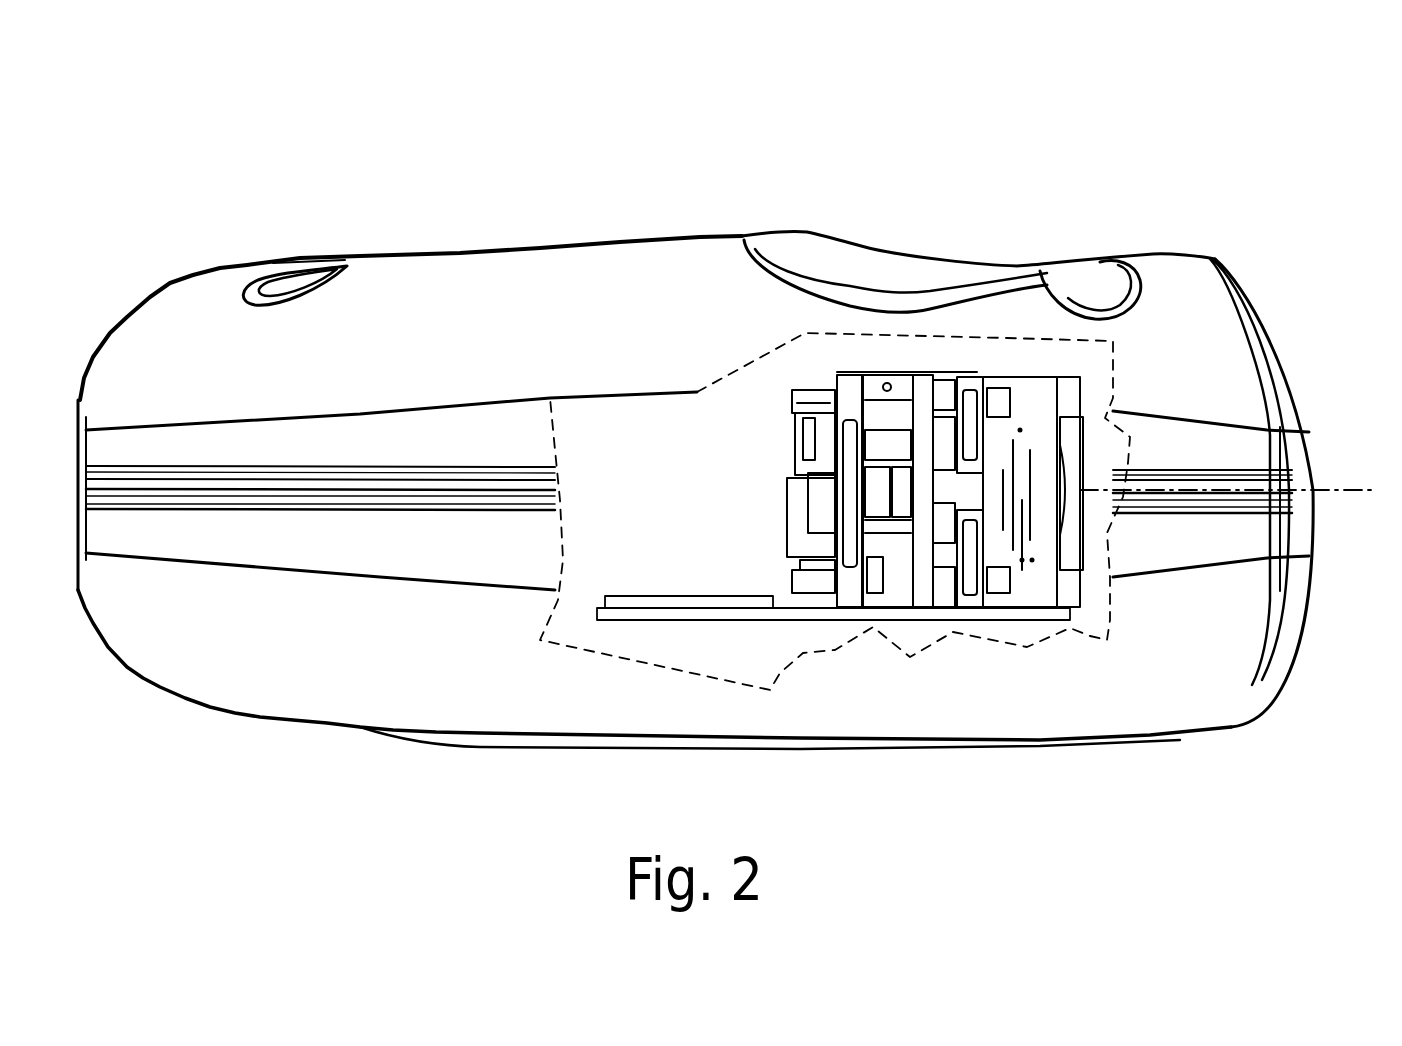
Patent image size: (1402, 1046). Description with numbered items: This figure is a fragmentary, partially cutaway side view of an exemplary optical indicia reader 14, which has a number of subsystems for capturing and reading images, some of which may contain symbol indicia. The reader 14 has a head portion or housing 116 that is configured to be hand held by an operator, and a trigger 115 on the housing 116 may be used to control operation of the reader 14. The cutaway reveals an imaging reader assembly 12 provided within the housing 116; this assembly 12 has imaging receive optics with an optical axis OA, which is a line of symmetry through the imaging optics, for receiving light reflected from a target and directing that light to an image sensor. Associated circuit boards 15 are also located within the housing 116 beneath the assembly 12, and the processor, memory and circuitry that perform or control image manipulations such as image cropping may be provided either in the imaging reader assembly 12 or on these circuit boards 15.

The optical indicia reader 14 is at (487, 84).
The housing 116 is at (192, 278).
The trigger 115 is at (872, 247).
The imaging reader assembly 12 is at (768, 418).
The circuit boards 15 is at (676, 595).
The optical axis OA is at (1340, 491).